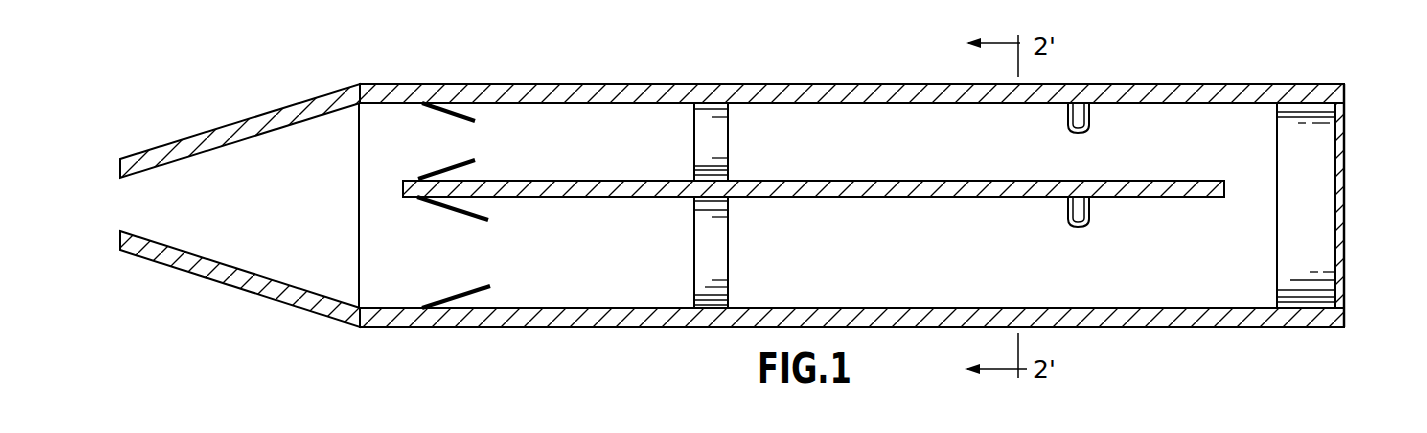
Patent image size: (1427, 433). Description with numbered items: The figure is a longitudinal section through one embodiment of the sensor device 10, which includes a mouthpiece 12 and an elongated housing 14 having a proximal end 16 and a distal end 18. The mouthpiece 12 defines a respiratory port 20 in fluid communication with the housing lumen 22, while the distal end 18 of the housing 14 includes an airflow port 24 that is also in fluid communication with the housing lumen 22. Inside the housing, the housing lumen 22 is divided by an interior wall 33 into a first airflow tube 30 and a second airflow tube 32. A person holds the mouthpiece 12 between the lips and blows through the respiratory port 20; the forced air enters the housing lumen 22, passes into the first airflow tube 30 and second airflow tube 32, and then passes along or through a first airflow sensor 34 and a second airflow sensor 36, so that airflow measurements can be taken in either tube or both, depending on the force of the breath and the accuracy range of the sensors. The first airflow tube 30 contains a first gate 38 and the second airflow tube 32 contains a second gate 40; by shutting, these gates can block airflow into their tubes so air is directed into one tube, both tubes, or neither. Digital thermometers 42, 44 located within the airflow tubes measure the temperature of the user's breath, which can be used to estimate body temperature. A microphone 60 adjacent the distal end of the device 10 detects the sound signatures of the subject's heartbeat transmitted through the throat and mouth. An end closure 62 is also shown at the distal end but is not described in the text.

The sensor device 10 is at (532, 66).
The mouthpiece 12 is at (234, 122).
The elongated housing 14 is at (813, 84).
The proximal end 16 is at (410, 328).
The distal end 18 is at (1281, 328).
The respiratory port 20 is at (137, 204).
The housing lumen 22 is at (387, 188).
The airflow port 24 is at (1308, 197).
The first airflow tube 30 is at (648, 153).
The second airflow tube 32 is at (648, 265).
The interior wall 33 is at (558, 198).
The first airflow sensor 34 is at (722, 140).
The second airflow sensor 36 is at (722, 253).
The first gate 38 is at (452, 117).
The second gate 40 is at (468, 215).
The digital thermometer 42 is at (1068, 121).
The digital thermometer 44 is at (1068, 213).
The microphone 60 is at (1285, 267).
The end cap 62 is at (1339, 252).